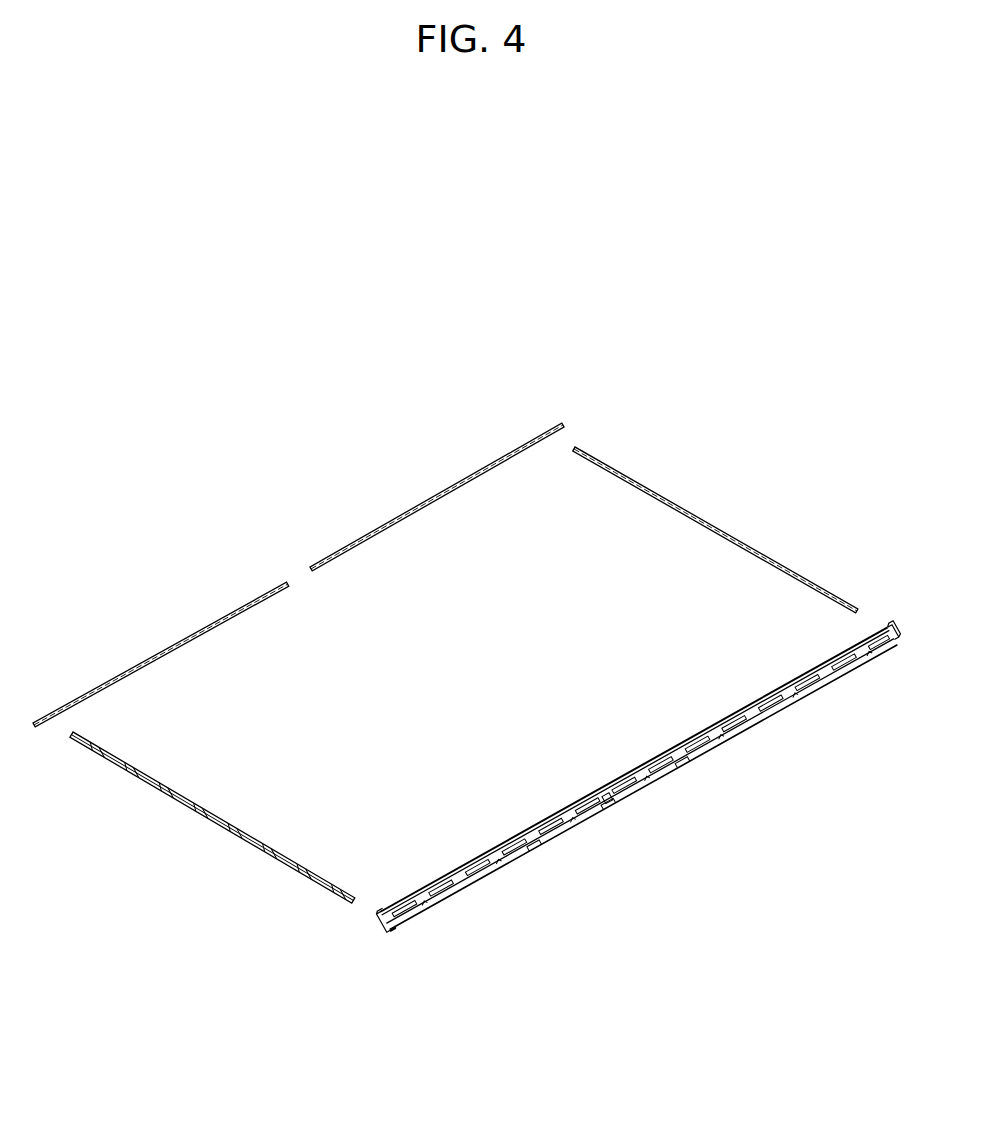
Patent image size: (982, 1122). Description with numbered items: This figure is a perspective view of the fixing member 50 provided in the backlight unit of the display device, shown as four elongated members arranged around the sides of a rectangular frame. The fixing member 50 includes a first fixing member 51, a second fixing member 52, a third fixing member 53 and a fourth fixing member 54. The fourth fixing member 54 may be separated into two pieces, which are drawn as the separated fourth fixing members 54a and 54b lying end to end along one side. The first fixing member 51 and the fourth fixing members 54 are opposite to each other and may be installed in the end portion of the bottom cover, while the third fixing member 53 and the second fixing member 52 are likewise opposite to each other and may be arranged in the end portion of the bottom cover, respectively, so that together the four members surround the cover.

The fixing member 50 is at (129, 503).
The first fixing member 51 is at (490, 863).
The second fixing member 52 is at (217, 822).
The third fixing member 53 is at (689, 508).
The fourth fixing member 54 is at (303, 481).
The separated fourth fixing member 54a is at (263, 583).
The separated fourth fixing member 54b is at (335, 550).